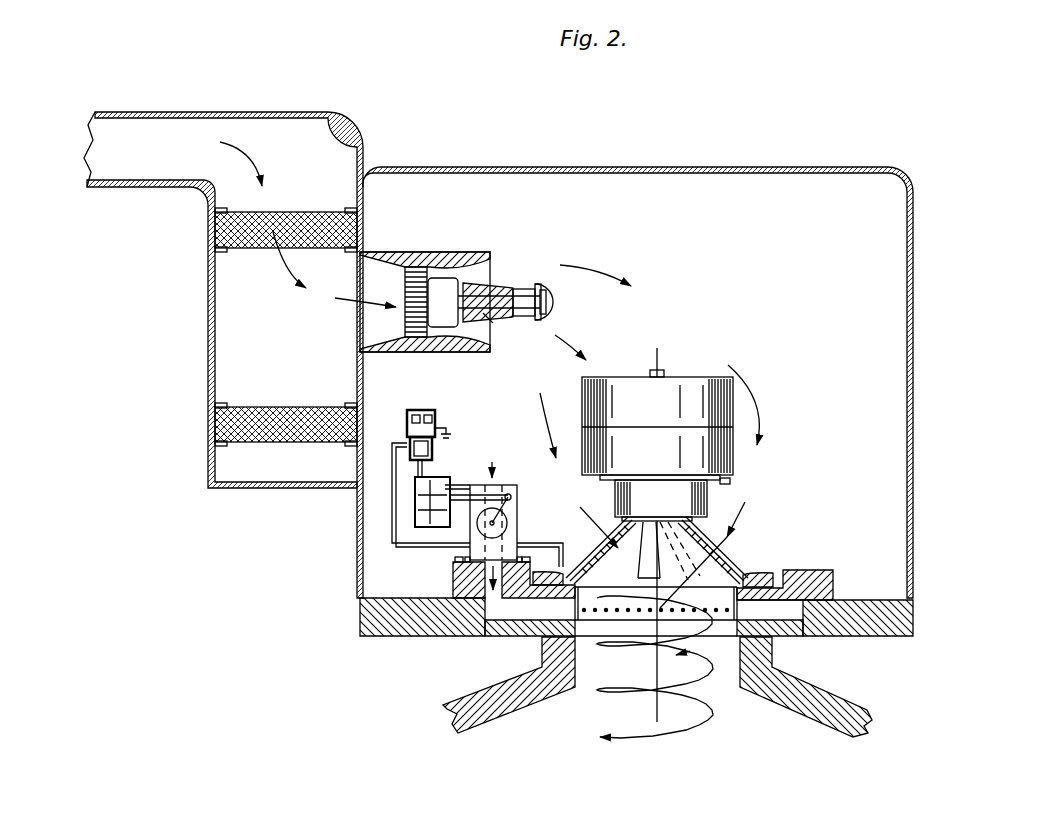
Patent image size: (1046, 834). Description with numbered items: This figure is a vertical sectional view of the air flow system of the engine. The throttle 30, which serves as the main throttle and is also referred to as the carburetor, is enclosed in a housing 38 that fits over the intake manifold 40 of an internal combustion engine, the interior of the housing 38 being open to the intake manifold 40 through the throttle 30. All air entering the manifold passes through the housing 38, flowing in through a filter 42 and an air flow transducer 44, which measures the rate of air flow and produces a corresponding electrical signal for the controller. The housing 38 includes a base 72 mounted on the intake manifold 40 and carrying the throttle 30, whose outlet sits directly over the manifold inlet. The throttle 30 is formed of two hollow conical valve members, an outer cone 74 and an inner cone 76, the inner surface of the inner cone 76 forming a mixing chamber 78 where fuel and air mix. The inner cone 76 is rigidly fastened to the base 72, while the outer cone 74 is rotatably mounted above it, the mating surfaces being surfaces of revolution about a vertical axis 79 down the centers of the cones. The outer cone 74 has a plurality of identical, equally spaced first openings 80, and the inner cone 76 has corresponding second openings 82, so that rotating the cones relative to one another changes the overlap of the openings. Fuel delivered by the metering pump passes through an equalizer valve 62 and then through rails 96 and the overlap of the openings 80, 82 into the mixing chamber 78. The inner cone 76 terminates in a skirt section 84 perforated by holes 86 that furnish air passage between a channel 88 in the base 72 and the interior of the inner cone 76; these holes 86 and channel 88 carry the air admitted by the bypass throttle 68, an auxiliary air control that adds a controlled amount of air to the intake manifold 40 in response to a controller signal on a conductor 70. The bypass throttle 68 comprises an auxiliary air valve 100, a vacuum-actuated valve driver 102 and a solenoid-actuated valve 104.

The throttle 30 is at (725, 548).
The housing 38 is at (641, 166).
The intake manifold 40 is at (840, 705).
The filter 42 is at (228, 233).
The air flow transducer 44 is at (460, 252).
The equalizer valve 62 is at (718, 377).
The bypass throttle 68 is at (507, 452).
The conductor 70 is at (438, 414).
The base 72 is at (360, 623).
The outer cone 74 is at (737, 557).
The inner cone 76 is at (742, 578).
The mixing chamber 78 is at (700, 556).
The axis 79 is at (640, 686).
The first openings 80 is at (622, 528).
The second openings 82 is at (698, 530).
The skirt section 84 is at (718, 612).
The holes 86 is at (570, 600).
The channel 88 is at (505, 602).
The rails 96 is at (570, 528).
The auxiliary air valve 100 is at (517, 487).
The vacuum-actuated valve driver 102 is at (443, 477).
The solenoid-actuated valve 104 is at (424, 410).